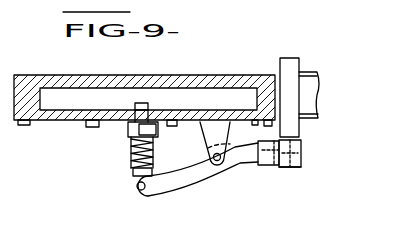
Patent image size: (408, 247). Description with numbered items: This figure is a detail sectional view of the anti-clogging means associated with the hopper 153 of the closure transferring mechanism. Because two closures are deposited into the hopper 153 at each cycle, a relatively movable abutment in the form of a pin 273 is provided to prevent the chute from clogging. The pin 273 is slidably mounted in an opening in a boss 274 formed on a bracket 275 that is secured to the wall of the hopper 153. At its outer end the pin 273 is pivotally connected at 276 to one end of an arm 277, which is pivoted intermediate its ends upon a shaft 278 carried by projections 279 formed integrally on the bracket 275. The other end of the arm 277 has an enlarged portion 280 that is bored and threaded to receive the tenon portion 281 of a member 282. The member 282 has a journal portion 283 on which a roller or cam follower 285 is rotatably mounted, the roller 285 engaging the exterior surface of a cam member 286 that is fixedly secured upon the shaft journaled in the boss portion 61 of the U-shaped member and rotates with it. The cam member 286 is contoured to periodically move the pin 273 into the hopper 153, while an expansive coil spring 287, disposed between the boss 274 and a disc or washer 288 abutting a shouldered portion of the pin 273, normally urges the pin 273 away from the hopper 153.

The hopper 153 is at (60, 88).
The pin 273 is at (135, 106).
The boss 274 is at (128, 132).
The bracket 275 is at (84, 123).
The pivotal connection 276 is at (138, 197).
The arm 277 is at (190, 187).
The shaft 278 is at (220, 171).
The projections 279 is at (216, 135).
The enlarged portion 280 is at (272, 166).
The tenon portion 281 is at (274, 168).
The member 282 is at (300, 153).
The journal portion 283 is at (291, 172).
The roller or cam follower 285 is at (288, 168).
The cam member 286 is at (289, 66).
The expansive coil spring 287 is at (130, 156).
The disc or washer 288 is at (132, 175).
The boss portion 61 is at (309, 82).